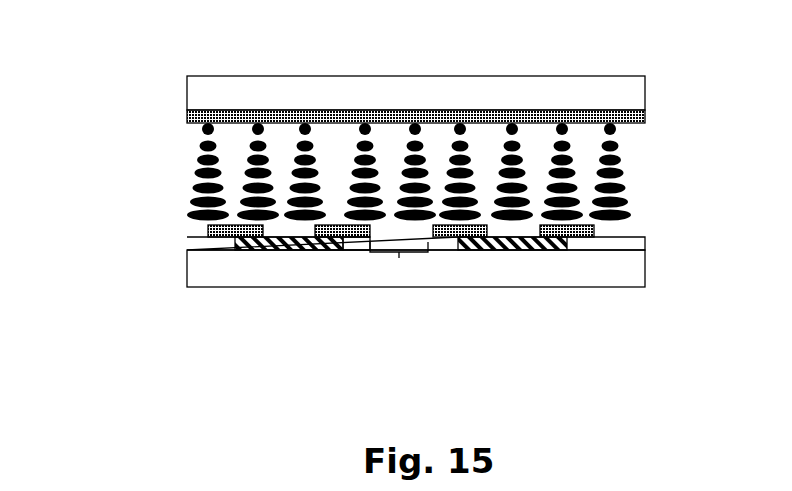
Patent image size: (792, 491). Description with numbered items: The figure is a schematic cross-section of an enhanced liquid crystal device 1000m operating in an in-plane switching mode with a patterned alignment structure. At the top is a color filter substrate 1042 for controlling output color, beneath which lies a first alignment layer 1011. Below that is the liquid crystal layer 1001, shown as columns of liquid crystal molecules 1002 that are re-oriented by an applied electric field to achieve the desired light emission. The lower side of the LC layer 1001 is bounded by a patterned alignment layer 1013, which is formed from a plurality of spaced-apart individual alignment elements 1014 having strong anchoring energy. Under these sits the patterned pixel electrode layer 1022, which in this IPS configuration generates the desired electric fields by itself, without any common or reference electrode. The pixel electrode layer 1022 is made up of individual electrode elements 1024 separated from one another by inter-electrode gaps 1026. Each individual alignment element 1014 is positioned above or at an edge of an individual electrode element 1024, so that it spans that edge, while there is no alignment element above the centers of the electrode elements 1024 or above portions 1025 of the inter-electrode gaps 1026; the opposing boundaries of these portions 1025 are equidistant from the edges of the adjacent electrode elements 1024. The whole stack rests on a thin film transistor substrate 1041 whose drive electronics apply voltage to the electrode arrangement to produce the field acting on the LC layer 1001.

The liquid crystal device 1000m is at (170, 80).
The liquid crystal molecules 1002 is at (560, 163).
The color filter substrate 1042 is at (650, 76).
The first alignment layer 1011 is at (650, 111).
The liquid crystal layer 1001 is at (650, 125).
The patterned alignment layer 1013 is at (645, 229).
The pixel electrode layer 1022 is at (650, 237).
The thin film transistor substrate 1041 is at (650, 251).
The individual electrode elements 1024 is at (290, 250).
The inter-electrode gaps 1026 is at (363, 250).
The portions of the inter-electrode gaps 1025 is at (399, 258).
The individual alignment elements 1014 is at (580, 237).